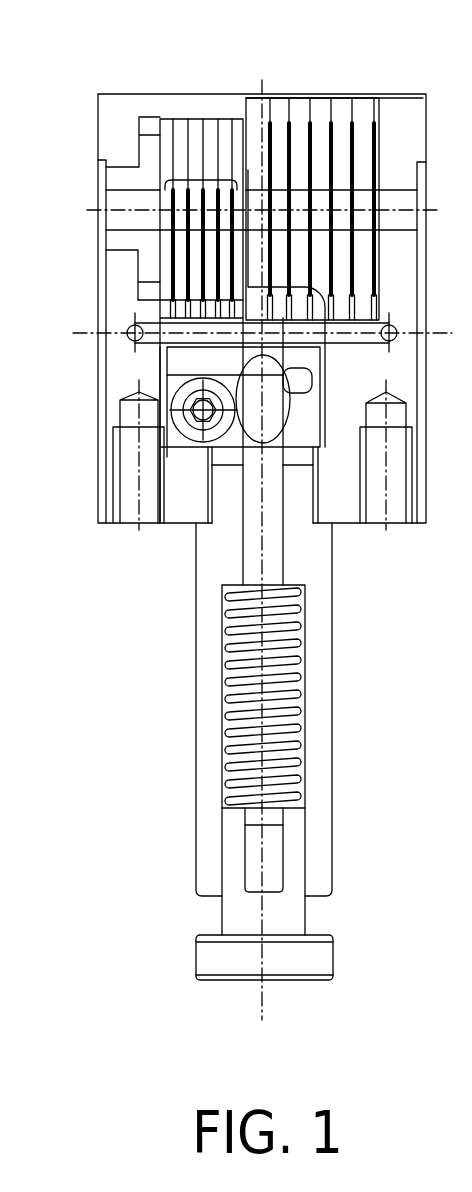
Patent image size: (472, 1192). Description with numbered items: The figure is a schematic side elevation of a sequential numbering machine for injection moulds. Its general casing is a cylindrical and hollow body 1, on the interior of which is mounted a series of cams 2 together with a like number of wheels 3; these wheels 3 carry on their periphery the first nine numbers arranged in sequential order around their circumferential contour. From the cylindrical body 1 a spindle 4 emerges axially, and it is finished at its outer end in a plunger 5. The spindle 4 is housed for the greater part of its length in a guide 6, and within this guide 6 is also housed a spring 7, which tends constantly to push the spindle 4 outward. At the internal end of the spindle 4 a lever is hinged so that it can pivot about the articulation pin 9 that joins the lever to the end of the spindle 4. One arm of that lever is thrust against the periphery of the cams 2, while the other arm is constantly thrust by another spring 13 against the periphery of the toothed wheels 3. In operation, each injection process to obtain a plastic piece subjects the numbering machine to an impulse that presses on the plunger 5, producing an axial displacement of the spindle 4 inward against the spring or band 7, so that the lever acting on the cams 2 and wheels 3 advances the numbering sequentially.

The cylindrical and hollow body 1 is at (123, 367).
The cams 2 is at (237, 128).
The wheels 3 is at (367, 104).
The spring 13 is at (207, 221).
The articulation pin 9 is at (237, 358).
The spindle 4 is at (250, 558).
The guide 6 is at (207, 697).
The spring 7 is at (223, 782).
The plunger 5 is at (205, 955).